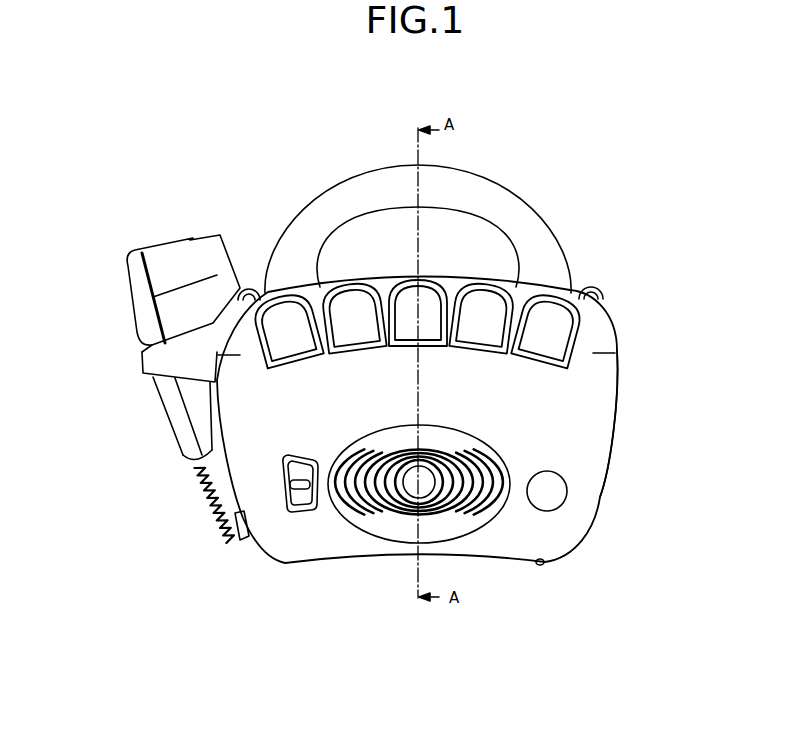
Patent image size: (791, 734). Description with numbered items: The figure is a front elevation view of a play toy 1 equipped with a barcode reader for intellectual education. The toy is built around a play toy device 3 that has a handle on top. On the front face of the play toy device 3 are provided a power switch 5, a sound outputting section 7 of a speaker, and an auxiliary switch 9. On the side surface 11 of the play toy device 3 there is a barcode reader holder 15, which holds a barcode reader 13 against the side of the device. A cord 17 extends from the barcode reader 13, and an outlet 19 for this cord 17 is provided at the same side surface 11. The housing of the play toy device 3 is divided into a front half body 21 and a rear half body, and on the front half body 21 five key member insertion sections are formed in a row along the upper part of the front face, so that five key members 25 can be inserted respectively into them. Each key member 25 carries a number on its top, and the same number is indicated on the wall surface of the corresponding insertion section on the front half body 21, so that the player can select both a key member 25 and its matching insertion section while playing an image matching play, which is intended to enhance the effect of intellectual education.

The play toy 1 is at (586, 268).
The play toy device 3 is at (618, 390).
The power switch 5 is at (291, 513).
The sound outputting section 7 is at (456, 530).
The auxiliary switch 9 is at (566, 498).
The side surface 11 is at (141, 441).
The barcode reader 13 is at (138, 303).
The barcode reader holder 15 is at (180, 357).
The cord 17 is at (207, 502).
The outlet 19 is at (238, 540).
The front half body 21 is at (588, 442).
The key members 25 is at (408, 306).